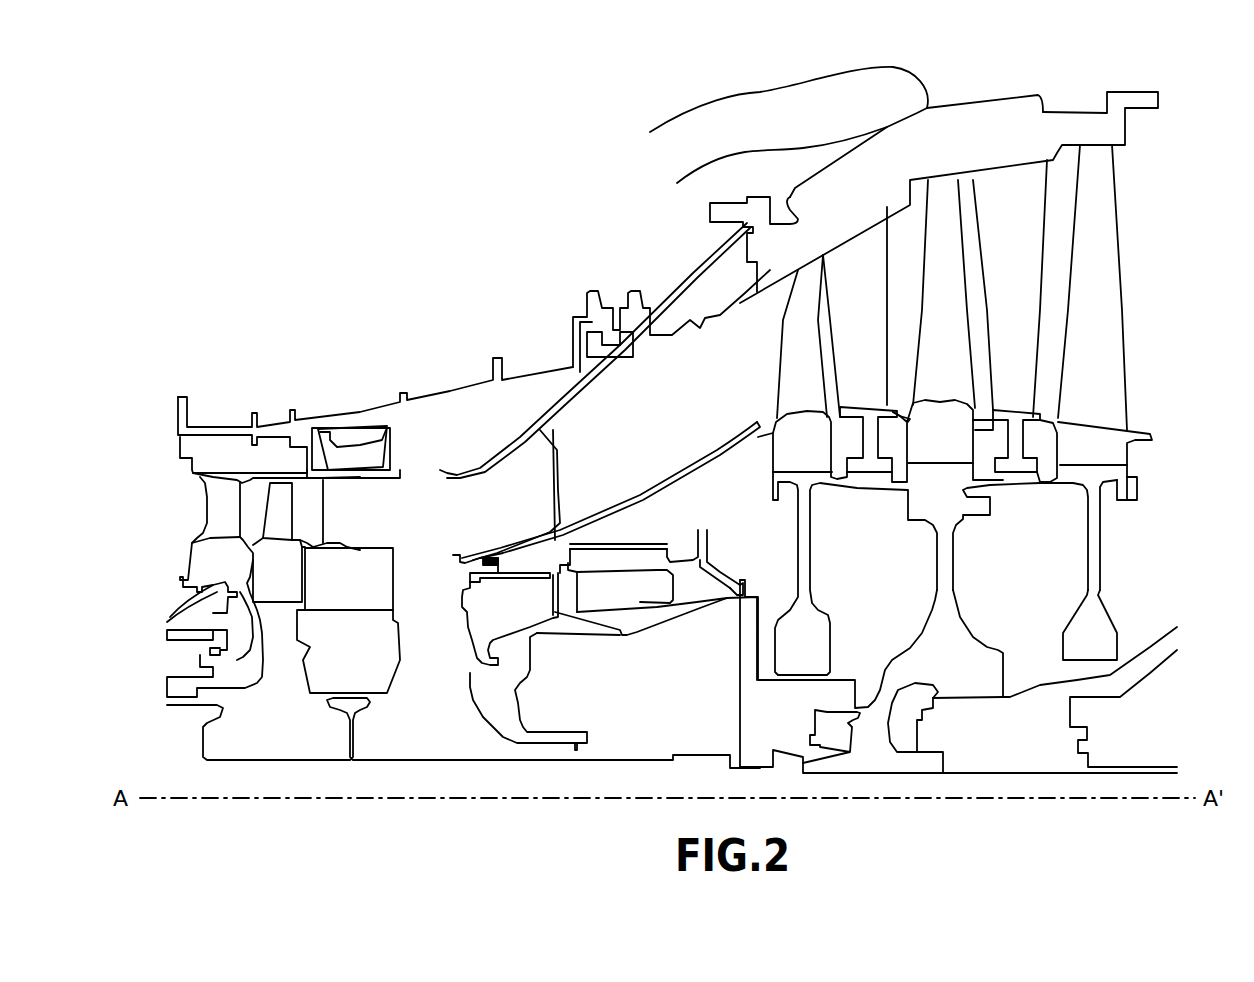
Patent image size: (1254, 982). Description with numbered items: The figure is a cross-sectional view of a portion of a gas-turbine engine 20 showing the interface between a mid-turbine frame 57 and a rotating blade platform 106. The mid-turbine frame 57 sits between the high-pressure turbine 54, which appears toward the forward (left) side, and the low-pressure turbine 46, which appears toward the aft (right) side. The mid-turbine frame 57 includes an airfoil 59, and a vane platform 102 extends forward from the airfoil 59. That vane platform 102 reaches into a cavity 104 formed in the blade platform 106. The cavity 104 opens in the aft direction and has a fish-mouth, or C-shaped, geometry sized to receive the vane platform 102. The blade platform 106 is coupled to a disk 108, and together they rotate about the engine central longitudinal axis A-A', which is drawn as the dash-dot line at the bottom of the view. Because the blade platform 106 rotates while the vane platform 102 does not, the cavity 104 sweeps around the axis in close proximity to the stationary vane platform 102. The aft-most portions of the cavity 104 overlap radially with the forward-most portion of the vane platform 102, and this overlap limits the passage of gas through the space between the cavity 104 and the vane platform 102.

The gas-turbine engine 20 is at (518, 195).
The low-pressure turbine 46 is at (948, 178).
The high-pressure turbine 54 is at (346, 475).
The mid-turbine frame 57 is at (570, 396).
The airfoil 59 is at (633, 451).
The vane platform 102 is at (462, 558).
The cavity 104 is at (450, 568).
The blade platform 106 is at (410, 596).
The disk 108 is at (437, 722).